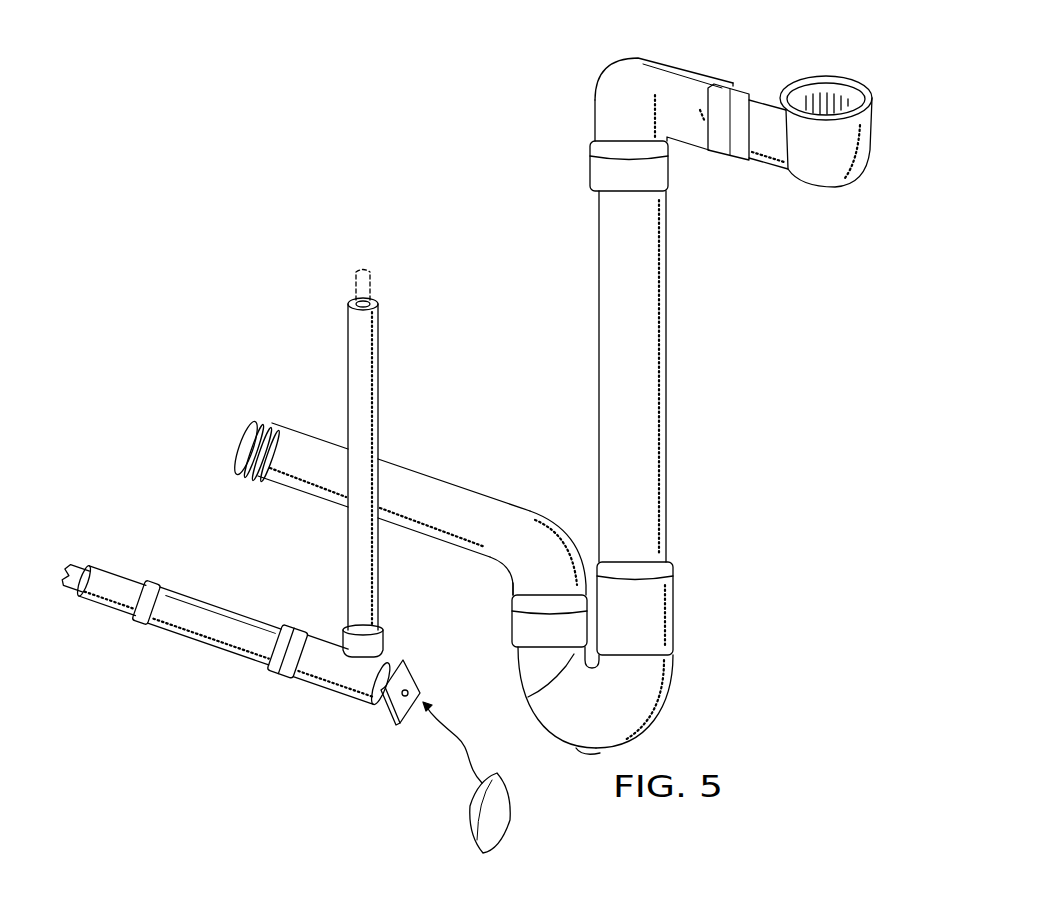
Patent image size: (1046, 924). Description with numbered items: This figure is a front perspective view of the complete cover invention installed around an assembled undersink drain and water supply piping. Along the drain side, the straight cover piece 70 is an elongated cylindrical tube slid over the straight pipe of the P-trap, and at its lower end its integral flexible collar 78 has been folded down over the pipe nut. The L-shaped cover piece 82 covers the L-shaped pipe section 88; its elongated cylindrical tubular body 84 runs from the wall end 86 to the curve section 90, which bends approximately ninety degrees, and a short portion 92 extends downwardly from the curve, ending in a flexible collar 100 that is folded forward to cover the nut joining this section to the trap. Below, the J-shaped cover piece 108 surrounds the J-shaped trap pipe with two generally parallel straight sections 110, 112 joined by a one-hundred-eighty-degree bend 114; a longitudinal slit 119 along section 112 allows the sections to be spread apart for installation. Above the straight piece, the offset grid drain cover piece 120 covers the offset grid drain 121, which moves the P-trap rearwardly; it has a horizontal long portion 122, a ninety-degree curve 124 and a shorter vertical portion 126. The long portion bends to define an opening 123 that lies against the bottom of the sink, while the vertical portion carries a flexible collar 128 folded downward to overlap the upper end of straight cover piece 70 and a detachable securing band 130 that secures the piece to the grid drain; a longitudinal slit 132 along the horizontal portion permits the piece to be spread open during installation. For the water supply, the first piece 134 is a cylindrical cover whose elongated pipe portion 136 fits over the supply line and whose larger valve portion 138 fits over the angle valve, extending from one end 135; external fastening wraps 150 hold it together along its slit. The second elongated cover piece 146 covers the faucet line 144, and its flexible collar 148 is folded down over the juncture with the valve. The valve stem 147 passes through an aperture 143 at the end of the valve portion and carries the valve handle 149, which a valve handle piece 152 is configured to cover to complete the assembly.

The straight cover piece 70 is at (613, 376).
The flexible collar 78 is at (664, 608).
The L-shaped cover piece 82 is at (389, 494).
The elongated cylindrical tubular body 84 is at (408, 488).
The wall end 86 is at (237, 432).
The L-shaped pipe section 88 is at (237, 463).
The curve section 90 is at (521, 543).
The short portion 92 is at (512, 584).
The flexible collar 100 is at (522, 623).
The J-shaped cover piece 108 is at (596, 700).
The straight section 110 is at (672, 653).
The straight section 112 is at (518, 658).
The 180° bend 114 is at (635, 737).
The longitudinal slit 119 is at (570, 660).
The offset grid drain cover piece 120 is at (854, 138).
The offset grid drain 121 is at (830, 101).
The horizontal long portion 122 is at (633, 82).
The opening 123 is at (872, 96).
The 90° curve 124 is at (632, 92).
The shorter vertical portion 126 is at (594, 122).
The flexible collar 128 is at (600, 167).
The detachable securing band 130 is at (734, 162).
The longitudinal slit 132 is at (712, 80).
The first piece 134 is at (217, 651).
The end 135 is at (75, 577).
The elongated pipe portion 136 is at (214, 626).
The valve portion 138 is at (343, 670).
The aperture 143 is at (381, 684).
The faucet line 144 is at (364, 274).
The second elongated cover piece 146 is at (361, 455).
The stem 147 is at (411, 689).
The flexible collar 148 is at (346, 634).
The valve handle 149 is at (397, 720).
The external fastening wraps 150 is at (219, 627).
The valve handle piece 152 is at (504, 830).